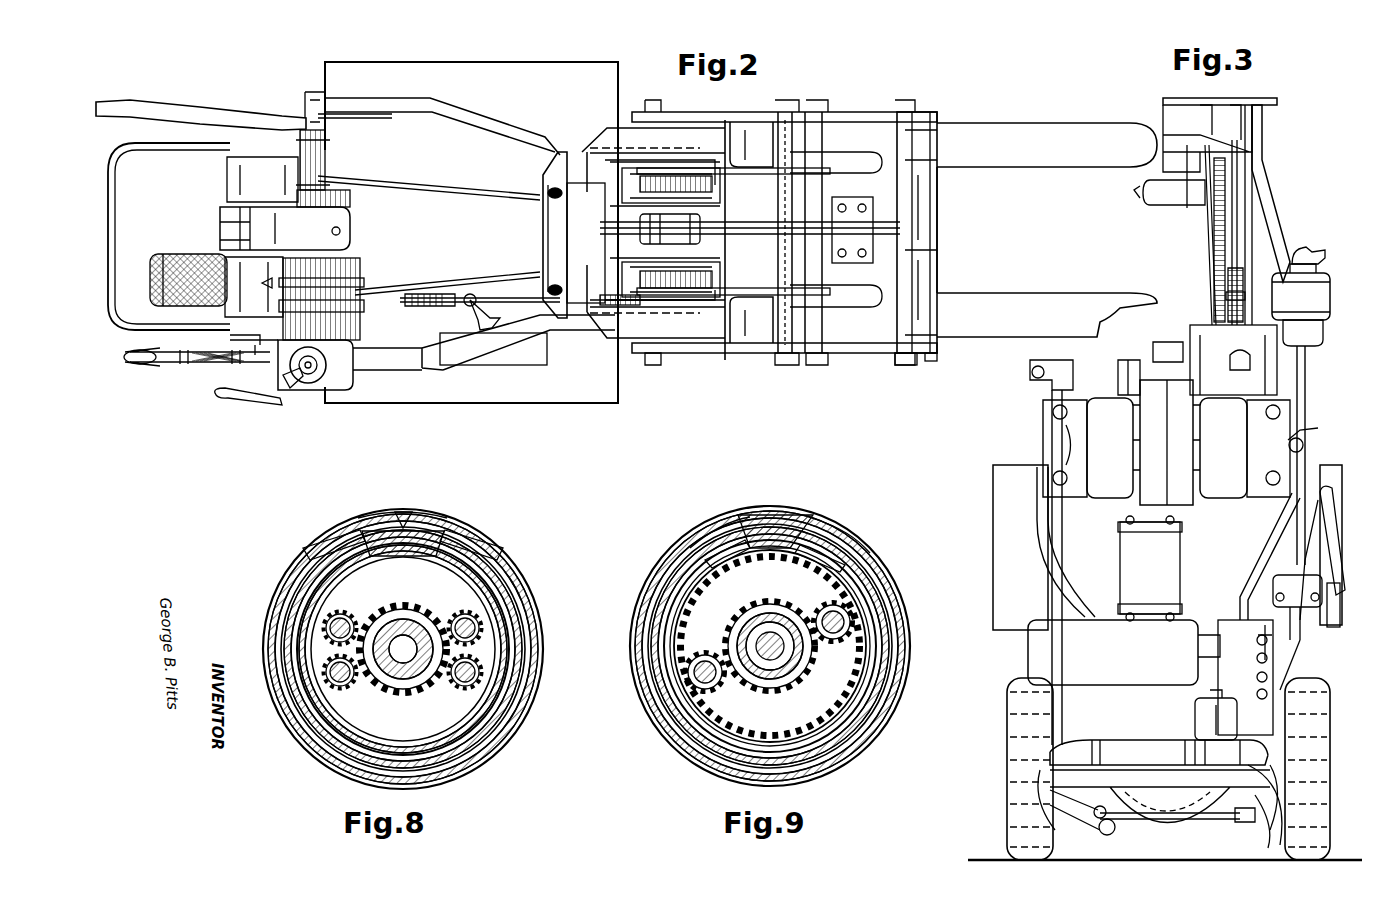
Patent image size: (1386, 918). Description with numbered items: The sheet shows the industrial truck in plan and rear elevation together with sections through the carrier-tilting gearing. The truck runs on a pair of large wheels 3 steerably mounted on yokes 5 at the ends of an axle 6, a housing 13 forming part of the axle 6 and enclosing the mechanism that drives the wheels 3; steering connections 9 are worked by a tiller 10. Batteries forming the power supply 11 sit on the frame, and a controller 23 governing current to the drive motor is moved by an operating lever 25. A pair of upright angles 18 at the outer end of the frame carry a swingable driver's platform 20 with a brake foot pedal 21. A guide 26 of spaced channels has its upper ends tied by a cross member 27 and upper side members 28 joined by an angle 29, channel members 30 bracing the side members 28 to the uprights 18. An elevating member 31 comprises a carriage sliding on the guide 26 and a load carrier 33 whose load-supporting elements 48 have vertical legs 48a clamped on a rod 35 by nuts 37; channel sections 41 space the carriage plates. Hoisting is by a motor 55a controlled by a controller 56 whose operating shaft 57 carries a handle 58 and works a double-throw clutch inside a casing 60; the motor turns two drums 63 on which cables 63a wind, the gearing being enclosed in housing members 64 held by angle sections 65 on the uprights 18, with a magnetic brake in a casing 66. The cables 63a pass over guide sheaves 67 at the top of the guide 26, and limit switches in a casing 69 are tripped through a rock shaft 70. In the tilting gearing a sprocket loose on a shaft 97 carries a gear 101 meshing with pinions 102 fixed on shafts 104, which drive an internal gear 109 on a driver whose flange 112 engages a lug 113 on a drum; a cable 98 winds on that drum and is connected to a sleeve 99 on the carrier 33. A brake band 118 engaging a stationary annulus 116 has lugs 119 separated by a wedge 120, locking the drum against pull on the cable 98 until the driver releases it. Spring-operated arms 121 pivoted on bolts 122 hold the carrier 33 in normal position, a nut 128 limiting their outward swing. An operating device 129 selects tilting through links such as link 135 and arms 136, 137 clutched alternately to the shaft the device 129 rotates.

In FIG. 3, the large wheels 3 is at (1335, 728).
In FIG. 3, the yokes 5 is at (1270, 825).
In FIG. 3, the axle 6 is at (1158, 797).
In FIG. 3, the steering connections 9 is at (1177, 822).
In FIG. 2, the tiller 10 is at (196, 104).
In FIG. 3, the tiller 10 is at (1028, 386).
In FIG. 2, the power supply 11 is at (322, 120).
In FIG. 3, the power supply 11 is at (992, 498).
In FIG. 3, the housing 13 is at (1150, 812).
In FIG. 3, the upright angles 18 is at (1040, 556).
In FIG. 2, the platform 20 is at (203, 236).
In FIG. 3, the platform 20 is at (1122, 738).
In FIG. 2, the foot pedal 21 is at (195, 252).
In FIG. 3, the foot pedal 21 is at (1192, 718).
In FIG. 3, the controller 23 is at (1150, 677).
In FIG. 2, the operating lever 25 is at (152, 370).
In FIG. 3, the operating lever 25 is at (1305, 442).
In FIG. 2, the guide 26 is at (705, 118).
In FIG. 2, the cross member 27 is at (728, 215).
In FIG. 2, the upper side members 28 is at (612, 132).
In FIG. 2, the angle 29 is at (540, 236).
In FIG. 2, the channel members 30 is at (462, 120).
In FIG. 3, the channel members 30 is at (1276, 222).
In FIG. 2, the elevating member 31 is at (830, 112).
In FIG. 2, the load carrier 33 is at (970, 230).
In FIG. 2, the rod 35 is at (892, 370).
In FIG. 2, the nuts 37 is at (930, 360).
In FIG. 2, the channel section 41 is at (751, 232).
In FIG. 2, the load engaging and supporting elements 48 is at (997, 125).
In FIG. 2, the vertical legs 48a is at (935, 298).
In FIG. 2, the hoisting motor 55a is at (362, 270).
In FIG. 3, the hoisting motor 55a is at (1198, 330).
In FIG. 2, the controller 56 is at (355, 386).
In FIG. 3, the controller 56 is at (1330, 288).
In FIG. 2, the operating shaft 57 is at (310, 384).
In FIG. 3, the operating shaft 57 is at (1308, 372).
In FIG. 2, the handle 58 is at (292, 388).
In FIG. 3, the handle 58 is at (1316, 248).
In FIG. 3, the casing 60 is at (1310, 578).
In FIG. 2, the drums 63 is at (325, 156).
In FIG. 2, the cables 63a is at (452, 286).
In FIG. 3, the cables 63a is at (1118, 362).
In FIG. 2, the housing members 64 is at (352, 234).
In FIG. 3, the housing members 64 is at (1188, 442).
In FIG. 2, the angle sections 65 is at (292, 112).
In FIG. 3, the angle sections 65 is at (1040, 436).
In FIG. 2, the brake casing 66 is at (352, 198).
In FIG. 3, the brake casing 66 is at (1150, 333).
In FIG. 2, the guide sheaves 67 is at (606, 210).
In FIG. 2, the switch casing 69 is at (520, 360).
In FIG. 2, the rock shaft 70 is at (497, 316).
In FIG. 8, the shaft 97 is at (412, 680).
In FIG. 9, the shaft 97 is at (772, 612).
In FIG. 2, the cable 98 is at (885, 228).
In FIG. 2, the sleeve 99 is at (938, 245).
In FIG. 8, the gear 101 is at (350, 615).
In FIG. 9, the gear 101 is at (755, 612).
In FIG. 8, the pinions 102 is at (455, 610).
In FIG. 9, the pinions 102 is at (826, 612).
In FIG. 8, the pinion shaft 104 is at (350, 620).
In FIG. 9, the pinion shaft 104 is at (703, 660).
In FIG. 9, the internal gear 109 is at (820, 690).
In FIG. 8, the driver flange 112 is at (530, 608).
In FIG. 9, the driver flange 112 is at (915, 668).
In FIG. 8, the lug 113 is at (440, 533).
In FIG. 8, the annulus 116 is at (505, 560).
In FIG. 9, the annulus 116 is at (908, 615).
In FIG. 8, the brake band 118 is at (322, 545).
In FIG. 9, the brake band 118 is at (912, 640).
In FIG. 8, the brake lugs 119 is at (372, 518).
In FIG. 9, the brake lugs 119 is at (748, 515).
In FIG. 8, the wedge 120 is at (406, 512).
In FIG. 9, the wedge 120 is at (785, 515).
In FIG. 2, the spring-operated arms 121 is at (866, 130).
In FIG. 2, the bolt 122 is at (778, 205).
In FIG. 3, the nut 128 is at (1350, 605).
In FIG. 2, the operating device 129 is at (250, 402).
In FIG. 3, the operating device 129 is at (1345, 536).
In FIG. 3, the link 135 is at (1305, 663).
In FIG. 3, the arm 136 is at (1262, 645).
In FIG. 3, the arm 137 is at (1305, 645).